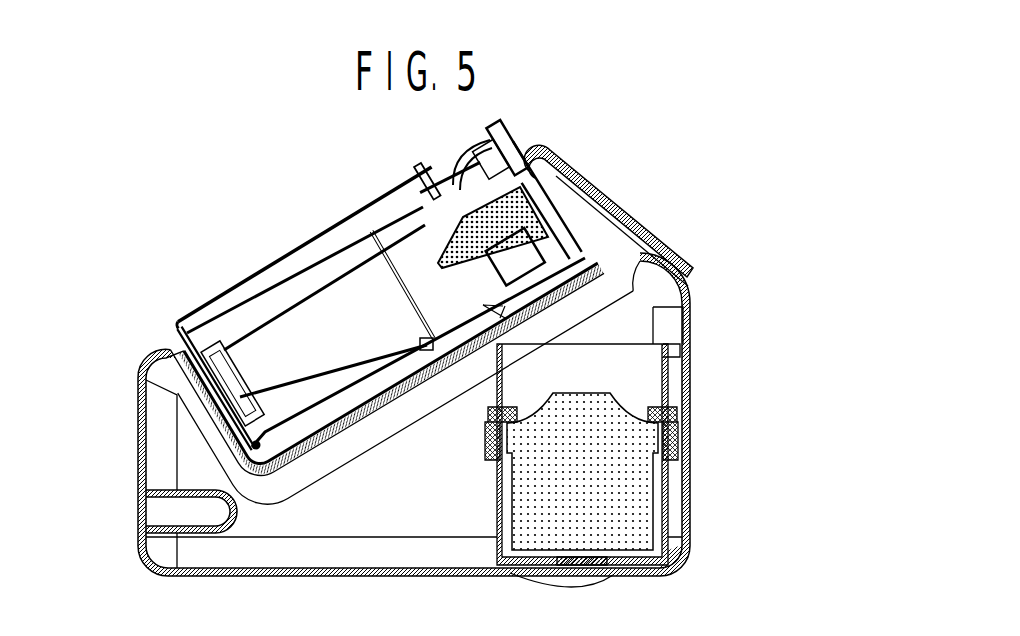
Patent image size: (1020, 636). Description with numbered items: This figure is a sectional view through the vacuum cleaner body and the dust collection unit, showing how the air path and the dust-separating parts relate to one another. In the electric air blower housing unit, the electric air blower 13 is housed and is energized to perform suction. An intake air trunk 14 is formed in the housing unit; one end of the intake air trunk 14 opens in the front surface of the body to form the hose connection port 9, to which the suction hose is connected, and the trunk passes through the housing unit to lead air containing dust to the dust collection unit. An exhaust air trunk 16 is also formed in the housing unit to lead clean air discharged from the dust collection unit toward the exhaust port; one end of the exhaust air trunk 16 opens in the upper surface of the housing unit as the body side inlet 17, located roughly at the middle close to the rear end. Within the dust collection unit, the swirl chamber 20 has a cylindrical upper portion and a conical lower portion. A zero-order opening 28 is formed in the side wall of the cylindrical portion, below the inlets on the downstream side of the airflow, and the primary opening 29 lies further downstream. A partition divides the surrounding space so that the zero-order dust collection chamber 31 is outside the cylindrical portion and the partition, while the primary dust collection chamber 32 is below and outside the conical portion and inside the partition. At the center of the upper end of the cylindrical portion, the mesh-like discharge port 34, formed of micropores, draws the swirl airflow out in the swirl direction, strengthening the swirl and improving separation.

The hose connection port 9 is at (140, 510).
The electric air blower 13 is at (630, 503).
The intake air trunk 14 is at (192, 515).
The exhaust air trunk 16 is at (593, 367).
The body side inlet 17 is at (655, 258).
The swirl chamber 20 is at (420, 227).
The zero-order opening 28 is at (363, 204).
The primary opening 29 is at (262, 480).
The zero-order dust collection chamber 31 is at (327, 240).
The primary dust collection chamber 32 is at (312, 395).
The discharge port 34 is at (530, 210).